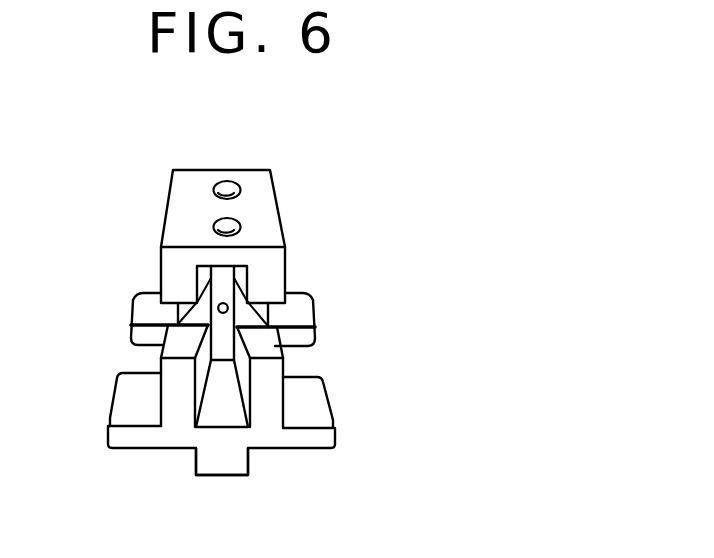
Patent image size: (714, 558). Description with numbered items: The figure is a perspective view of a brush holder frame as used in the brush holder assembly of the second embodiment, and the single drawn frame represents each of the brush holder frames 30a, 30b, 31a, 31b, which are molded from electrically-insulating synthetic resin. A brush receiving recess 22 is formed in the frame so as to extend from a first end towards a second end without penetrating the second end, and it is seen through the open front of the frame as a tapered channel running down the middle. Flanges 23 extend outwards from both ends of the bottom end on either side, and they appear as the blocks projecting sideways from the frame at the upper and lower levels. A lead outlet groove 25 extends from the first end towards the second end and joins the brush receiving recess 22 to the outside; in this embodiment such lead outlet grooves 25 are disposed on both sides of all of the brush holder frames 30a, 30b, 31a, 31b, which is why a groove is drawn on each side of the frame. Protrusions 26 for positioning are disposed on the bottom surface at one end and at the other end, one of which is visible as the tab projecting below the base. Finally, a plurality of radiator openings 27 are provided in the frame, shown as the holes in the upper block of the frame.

The brush receiving recess 22 is at (213, 400).
The flanges 23 is at (141, 314).
The lead outlet groove 25 is at (142, 322).
The protrusions for positioning 26 is at (217, 450).
The radiator openings 27 is at (225, 182).
The brush holder frame 30a is at (388, 215).
The brush holder frame 30b is at (388, 215).
The brush holder frame 31a is at (388, 215).
The brush holder frame 31b is at (270, 170).